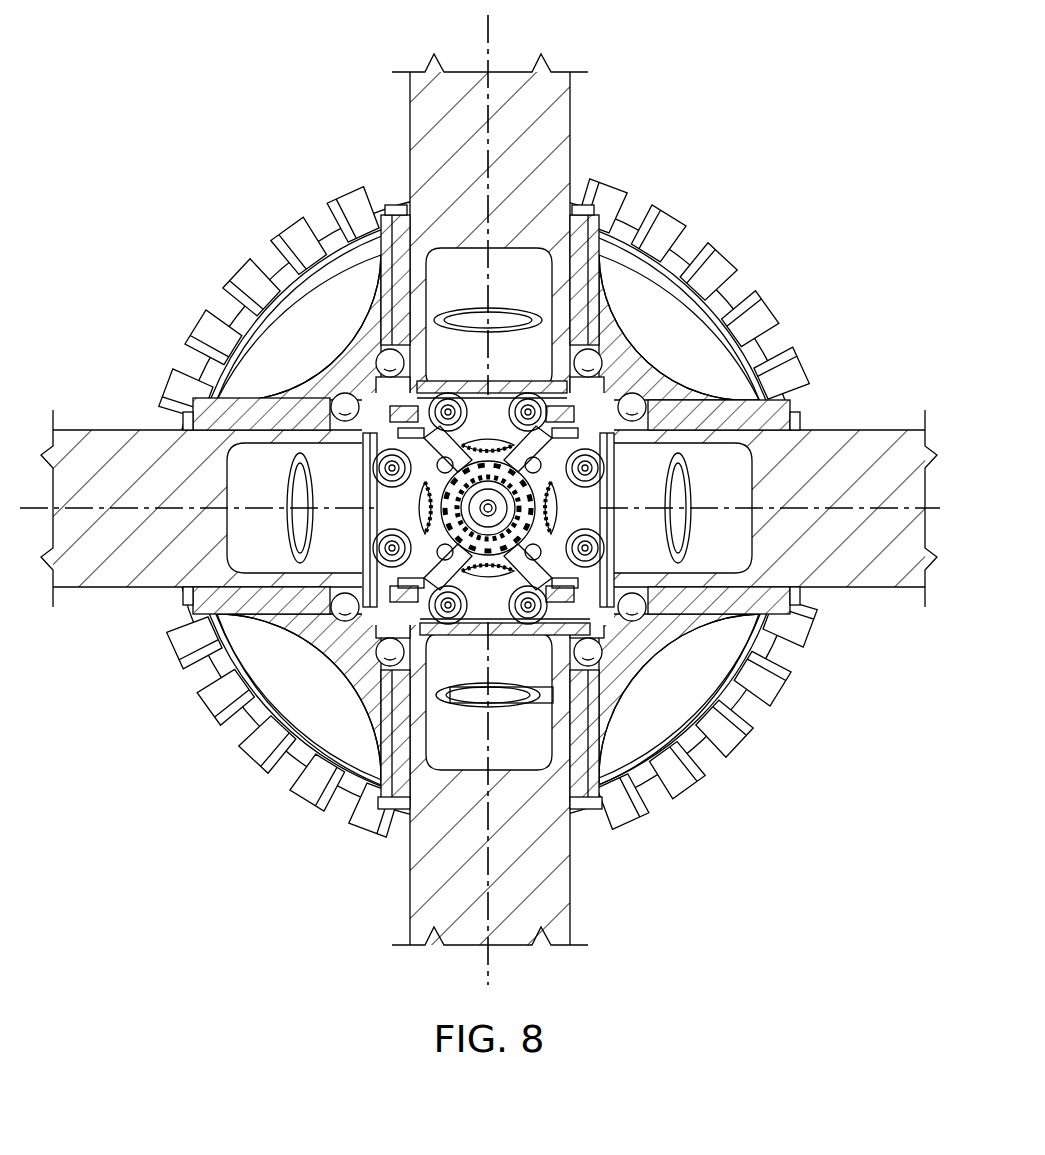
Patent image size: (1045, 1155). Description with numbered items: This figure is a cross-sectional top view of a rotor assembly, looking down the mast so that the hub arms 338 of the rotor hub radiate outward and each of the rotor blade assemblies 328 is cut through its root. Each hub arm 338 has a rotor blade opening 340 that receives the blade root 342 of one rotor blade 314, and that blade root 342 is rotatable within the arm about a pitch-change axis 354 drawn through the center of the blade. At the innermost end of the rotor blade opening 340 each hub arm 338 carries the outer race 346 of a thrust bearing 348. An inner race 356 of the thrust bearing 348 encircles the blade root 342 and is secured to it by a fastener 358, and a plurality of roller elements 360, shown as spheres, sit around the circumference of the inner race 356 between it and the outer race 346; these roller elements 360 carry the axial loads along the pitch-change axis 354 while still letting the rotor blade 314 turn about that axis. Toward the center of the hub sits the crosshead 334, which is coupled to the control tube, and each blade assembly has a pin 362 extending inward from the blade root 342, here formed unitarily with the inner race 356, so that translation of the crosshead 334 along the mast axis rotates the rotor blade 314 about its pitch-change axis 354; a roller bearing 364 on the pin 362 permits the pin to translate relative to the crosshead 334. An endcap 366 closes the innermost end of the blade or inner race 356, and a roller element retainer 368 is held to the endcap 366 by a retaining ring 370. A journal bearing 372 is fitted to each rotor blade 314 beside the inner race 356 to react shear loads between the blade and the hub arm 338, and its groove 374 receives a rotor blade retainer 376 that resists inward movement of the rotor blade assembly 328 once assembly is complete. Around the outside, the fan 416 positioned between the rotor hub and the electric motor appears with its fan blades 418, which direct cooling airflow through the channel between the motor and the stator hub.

The rotor blade 314 is at (560, 128).
The rotor blade assembly 328 is at (402, 131).
The crosshead 334 is at (560, 512).
The hub arm 338 is at (383, 278).
The rotor blade opening 340 is at (583, 313).
The blade root 342 is at (603, 240).
The outer race 346 is at (252, 618).
The thrust bearing 348 is at (320, 384).
The pitch-change axis 354 is at (491, 42).
The inner race 356 is at (397, 316).
The fastener 358 is at (692, 528).
The roller elements 360 is at (578, 365).
The pin 362 is at (613, 627).
The roller bearing 364 is at (570, 595).
The endcap 366 is at (486, 640).
The roller element retainer 368 is at (342, 625).
The retaining ring 370 is at (605, 387).
The journal bearing 372 is at (770, 390).
The groove 374 is at (590, 215).
The rotor blade retainer 376 is at (606, 205).
The fan 416 is at (198, 320).
The fan blades 418 is at (722, 262).